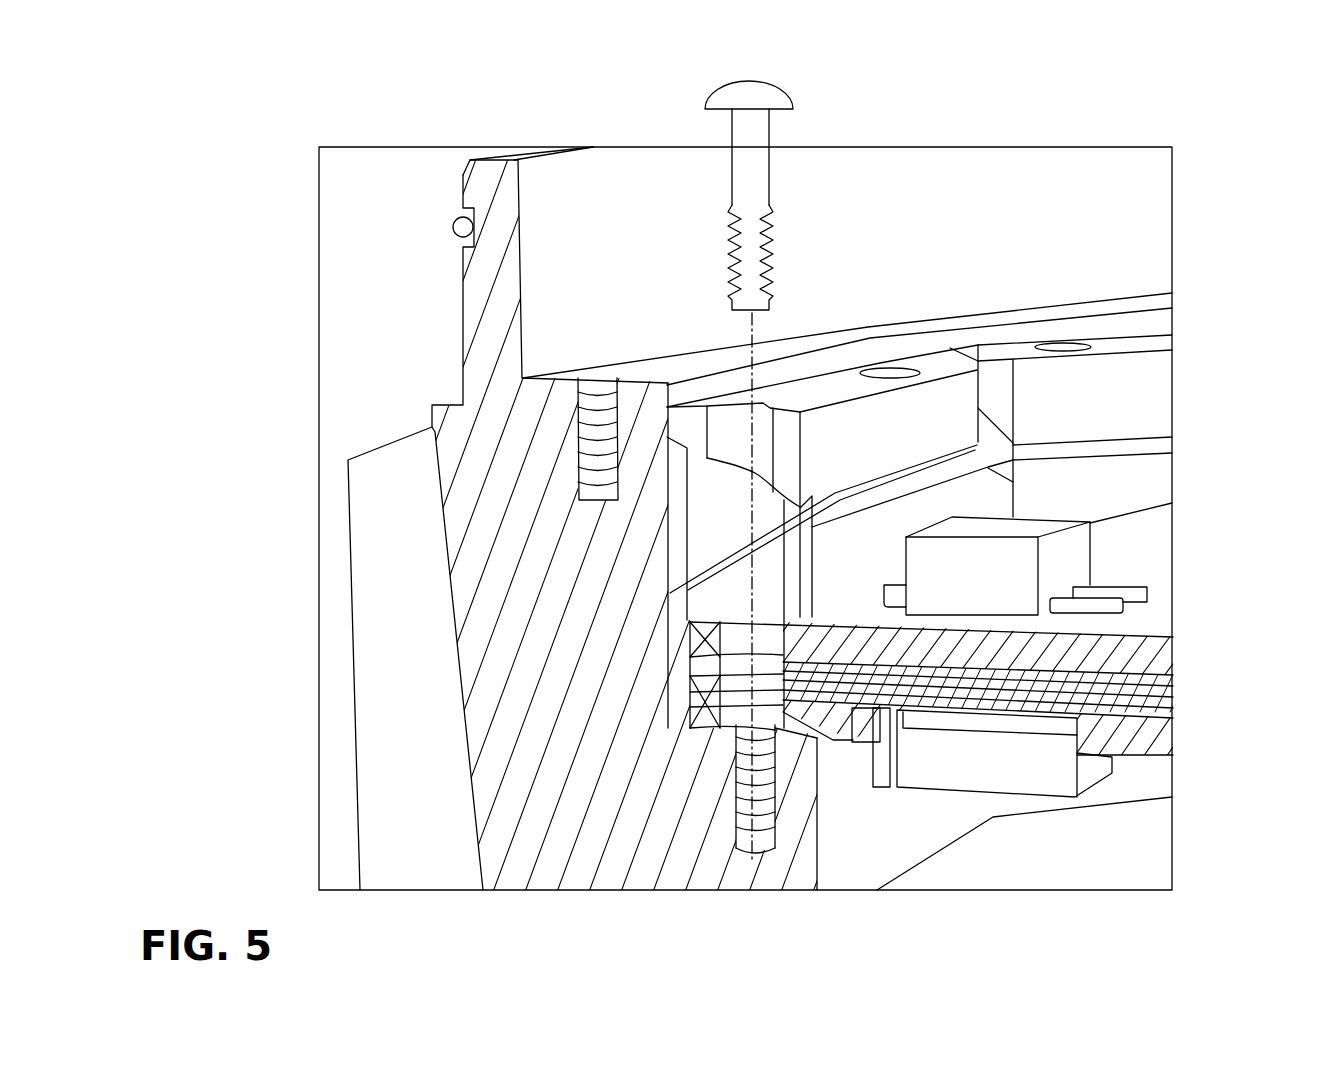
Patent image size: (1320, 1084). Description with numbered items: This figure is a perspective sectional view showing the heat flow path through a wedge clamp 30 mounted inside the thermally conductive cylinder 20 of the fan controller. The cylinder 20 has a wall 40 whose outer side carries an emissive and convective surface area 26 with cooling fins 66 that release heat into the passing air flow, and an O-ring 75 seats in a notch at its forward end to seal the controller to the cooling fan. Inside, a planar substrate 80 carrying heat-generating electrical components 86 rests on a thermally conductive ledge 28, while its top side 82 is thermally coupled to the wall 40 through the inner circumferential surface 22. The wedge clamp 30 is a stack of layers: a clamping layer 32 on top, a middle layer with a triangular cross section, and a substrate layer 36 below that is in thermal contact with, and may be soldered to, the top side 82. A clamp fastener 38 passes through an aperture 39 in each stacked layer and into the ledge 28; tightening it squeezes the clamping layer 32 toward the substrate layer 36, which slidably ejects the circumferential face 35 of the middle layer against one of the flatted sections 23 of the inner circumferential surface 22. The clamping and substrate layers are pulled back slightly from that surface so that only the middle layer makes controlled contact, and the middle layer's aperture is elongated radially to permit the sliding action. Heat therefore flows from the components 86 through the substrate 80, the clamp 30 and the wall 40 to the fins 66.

The thermally conductive cylinder 20 is at (937, 146).
The inner circumferential surface 22 is at (1145, 232).
The flatted section 23 is at (693, 392).
The emissive and convective surface area 26 is at (373, 795).
The thermally conductive ledge 28 is at (787, 860).
The wedge clamp 30 is at (1004, 305).
The clamping layer 32 is at (787, 442).
The circumferential face 35 is at (661, 494).
The substrate layer 36 is at (803, 597).
The clamp fastener 38 is at (792, 96).
The aperture 39 is at (733, 425).
The wall 40 is at (482, 180).
The cooling fins 66 is at (413, 812).
The O-ring 75 is at (456, 221).
The planar substrate 80 is at (1110, 697).
The top side 82 is at (1153, 562).
The heat-generating electrical components 86 is at (1065, 552).